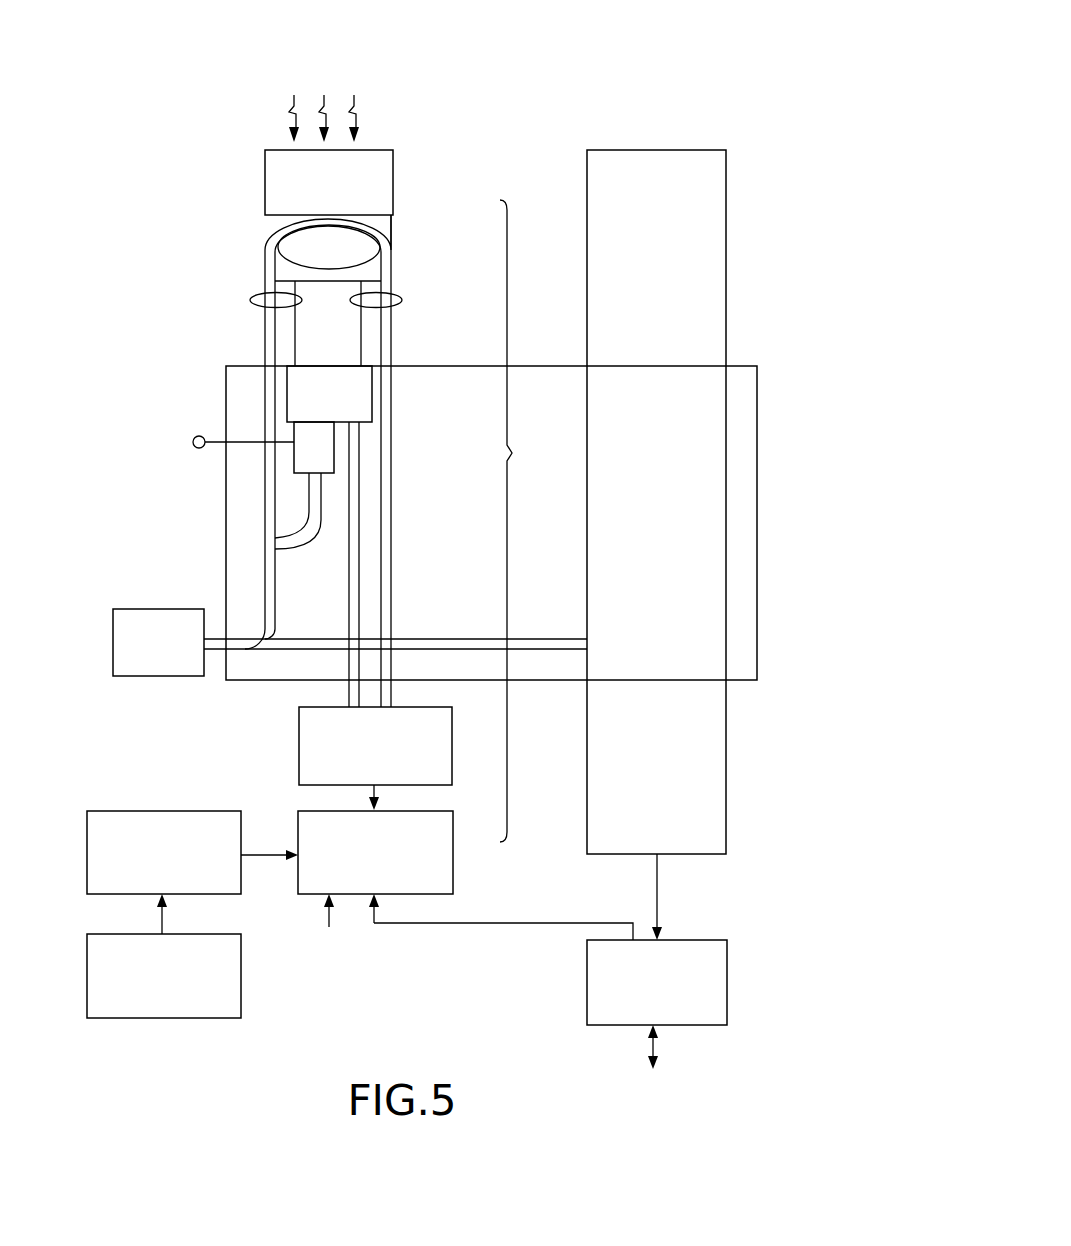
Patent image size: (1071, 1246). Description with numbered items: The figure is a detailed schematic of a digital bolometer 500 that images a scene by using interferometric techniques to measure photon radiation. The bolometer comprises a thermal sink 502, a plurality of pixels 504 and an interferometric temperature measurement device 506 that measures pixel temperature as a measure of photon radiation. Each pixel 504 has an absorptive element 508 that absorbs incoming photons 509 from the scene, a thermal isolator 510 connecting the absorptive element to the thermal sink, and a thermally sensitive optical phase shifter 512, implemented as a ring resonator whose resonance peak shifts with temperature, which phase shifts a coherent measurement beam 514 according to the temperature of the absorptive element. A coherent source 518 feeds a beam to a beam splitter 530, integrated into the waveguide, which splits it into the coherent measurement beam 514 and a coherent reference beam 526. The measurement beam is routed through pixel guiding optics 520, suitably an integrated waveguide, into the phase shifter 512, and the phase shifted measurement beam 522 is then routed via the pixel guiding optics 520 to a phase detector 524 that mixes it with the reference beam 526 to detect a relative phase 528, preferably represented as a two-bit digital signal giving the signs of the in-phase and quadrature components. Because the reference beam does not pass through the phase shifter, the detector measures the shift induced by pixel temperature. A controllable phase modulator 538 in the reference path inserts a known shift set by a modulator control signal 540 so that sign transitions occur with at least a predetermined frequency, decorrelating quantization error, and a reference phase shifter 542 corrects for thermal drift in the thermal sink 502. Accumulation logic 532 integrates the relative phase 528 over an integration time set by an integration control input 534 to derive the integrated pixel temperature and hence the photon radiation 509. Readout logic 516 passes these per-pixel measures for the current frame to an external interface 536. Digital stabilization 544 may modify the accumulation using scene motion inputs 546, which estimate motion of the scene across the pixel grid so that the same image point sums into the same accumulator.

The digital bolometer 500 is at (474, 74).
The thermal sink 502 is at (742, 366).
The pixel 504 is at (680, 150).
The interferometric temperature measurement device 506 is at (529, 521).
The absorptive element 508 is at (393, 198).
The incoming photons 509 is at (357, 103).
The thermal isolator 510 is at (250, 300).
The thermally sensitive optical phase shifter 512 is at (272, 245).
The coherent measurement beam 514 is at (262, 330).
The readout logic 516 is at (642, 1019).
The coherent source 518 is at (143, 665).
The pixel guiding optics 520 is at (382, 352).
The phase shifted measurement beam 522 is at (389, 385).
The phase detector 524 is at (360, 782).
The coherent reference beam 526 is at (307, 525).
The relative phase 528 is at (380, 800).
The beam splitter 530 is at (265, 544).
The accumulation logic 532 is at (360, 886).
The integration control input 534 is at (330, 929).
The external interface 536 is at (653, 1074).
The controllable phase modulator 538 is at (299, 456).
The modulator control signal 540 is at (224, 441).
The reference phase shifter 542 is at (314, 404).
The digital stabilization 544 is at (149, 886).
The scene motion inputs 546 is at (149, 1009).